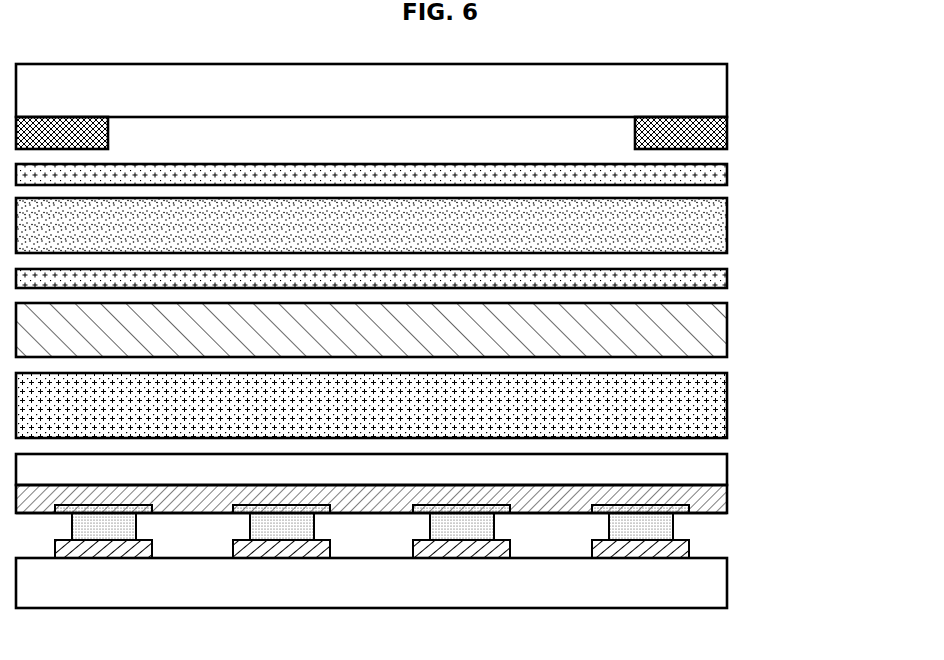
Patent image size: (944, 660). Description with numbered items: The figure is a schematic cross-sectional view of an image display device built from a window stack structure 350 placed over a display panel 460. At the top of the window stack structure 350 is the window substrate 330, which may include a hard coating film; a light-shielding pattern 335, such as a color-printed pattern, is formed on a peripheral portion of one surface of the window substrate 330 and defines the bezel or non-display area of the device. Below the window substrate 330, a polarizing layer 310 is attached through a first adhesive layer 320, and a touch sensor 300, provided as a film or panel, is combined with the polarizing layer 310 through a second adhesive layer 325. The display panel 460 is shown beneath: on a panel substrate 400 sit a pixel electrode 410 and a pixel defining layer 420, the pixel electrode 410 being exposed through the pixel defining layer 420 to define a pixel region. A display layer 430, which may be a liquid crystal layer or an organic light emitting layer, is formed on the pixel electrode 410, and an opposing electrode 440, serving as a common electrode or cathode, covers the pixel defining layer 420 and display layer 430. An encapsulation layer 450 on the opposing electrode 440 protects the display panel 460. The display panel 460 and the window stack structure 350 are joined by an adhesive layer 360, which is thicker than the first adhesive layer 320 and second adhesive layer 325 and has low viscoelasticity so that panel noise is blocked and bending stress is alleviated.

The touch sensor 300 is at (418, 330).
The polarizing layer 310 is at (720, 226).
The first adhesive layer 320 is at (722, 174).
The second adhesive layer 325 is at (722, 281).
The window substrate 330 is at (722, 93).
The light-shielding pattern 335 is at (726, 130).
The window stack structure 350 is at (452, 210).
The adhesive layer 360 is at (722, 405).
The panel substrate 400 is at (418, 583).
The pixel electrode 410 is at (690, 546).
The pixel defining layer 420 is at (722, 526).
The display layer 430 is at (656, 503).
The opposing electrode 440 is at (720, 497).
The encapsulation layer 450 is at (720, 470).
The display panel 460 is at (452, 519).